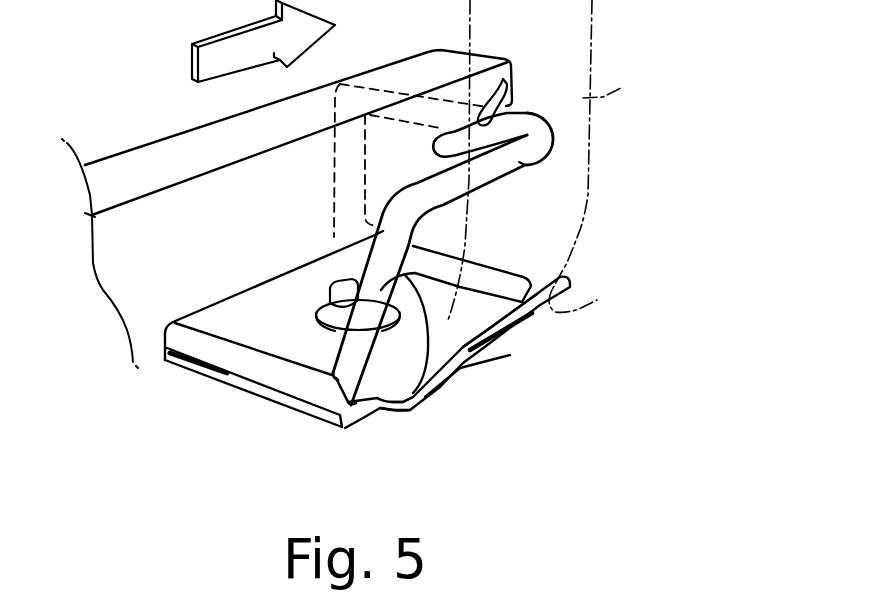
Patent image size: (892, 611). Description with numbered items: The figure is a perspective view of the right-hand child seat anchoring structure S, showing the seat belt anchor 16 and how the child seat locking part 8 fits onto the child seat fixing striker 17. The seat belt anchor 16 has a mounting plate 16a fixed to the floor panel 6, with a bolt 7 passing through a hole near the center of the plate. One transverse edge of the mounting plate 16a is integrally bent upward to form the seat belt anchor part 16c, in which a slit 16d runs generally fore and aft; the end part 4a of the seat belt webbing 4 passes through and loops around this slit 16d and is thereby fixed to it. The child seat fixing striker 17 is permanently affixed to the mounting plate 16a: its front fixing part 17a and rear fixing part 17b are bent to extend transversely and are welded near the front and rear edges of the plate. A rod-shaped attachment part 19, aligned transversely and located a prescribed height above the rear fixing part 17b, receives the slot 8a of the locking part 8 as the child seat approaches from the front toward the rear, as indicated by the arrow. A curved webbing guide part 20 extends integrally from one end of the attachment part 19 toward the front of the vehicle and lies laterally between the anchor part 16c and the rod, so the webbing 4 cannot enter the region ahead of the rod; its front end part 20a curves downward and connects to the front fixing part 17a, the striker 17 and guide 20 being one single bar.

The seat belt webbing 4 is at (628, 84).
The end part of the seat belt webbing 4a is at (578, 310).
The floor panel 6 is at (183, 405).
The bolt 7 is at (322, 300).
The child seat locking part 8 is at (152, 162).
The slot of the child seat locking part 8a is at (507, 82).
The seat belt anchor 16 is at (348, 431).
The mounting plate 16a is at (290, 297).
The seat belt anchor part 16c is at (492, 354).
The slit 16d is at (513, 337).
The child seat fixing striker 17 is at (566, 129).
The front fixing part 17a is at (278, 378).
The rear fixing part 17b is at (490, 264).
The rod-shaped attachment part 19 is at (505, 108).
The webbing guide part 20 is at (520, 162).
The front end part of the webbing guide part 20a is at (433, 393).
The child seat anchoring structure S is at (624, 228).